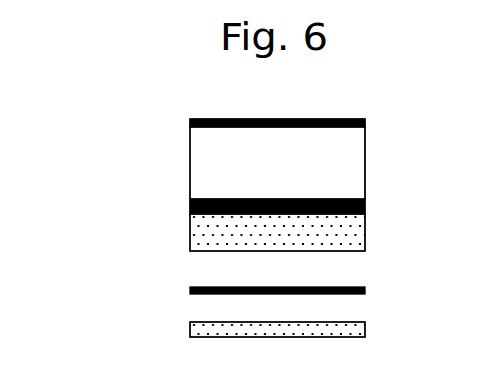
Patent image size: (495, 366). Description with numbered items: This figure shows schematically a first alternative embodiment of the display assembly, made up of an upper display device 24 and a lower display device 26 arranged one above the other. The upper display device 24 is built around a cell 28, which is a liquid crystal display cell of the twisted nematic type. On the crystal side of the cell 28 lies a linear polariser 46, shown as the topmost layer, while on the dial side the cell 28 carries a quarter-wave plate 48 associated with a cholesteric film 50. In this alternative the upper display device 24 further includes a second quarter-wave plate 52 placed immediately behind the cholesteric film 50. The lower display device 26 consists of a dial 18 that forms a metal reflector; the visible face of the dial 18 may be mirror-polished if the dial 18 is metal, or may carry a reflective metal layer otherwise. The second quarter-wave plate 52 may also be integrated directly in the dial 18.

The upper display device 24 is at (135, 183).
The lower display device 26 is at (150, 330).
The linear polariser 46 is at (365, 123).
The cell 28 is at (348, 167).
The quarter-wave plate 48 is at (365, 207).
The cholesteric film 50 is at (347, 238).
The second quarter-wave plate 52 is at (365, 291).
The dial 18 is at (347, 332).